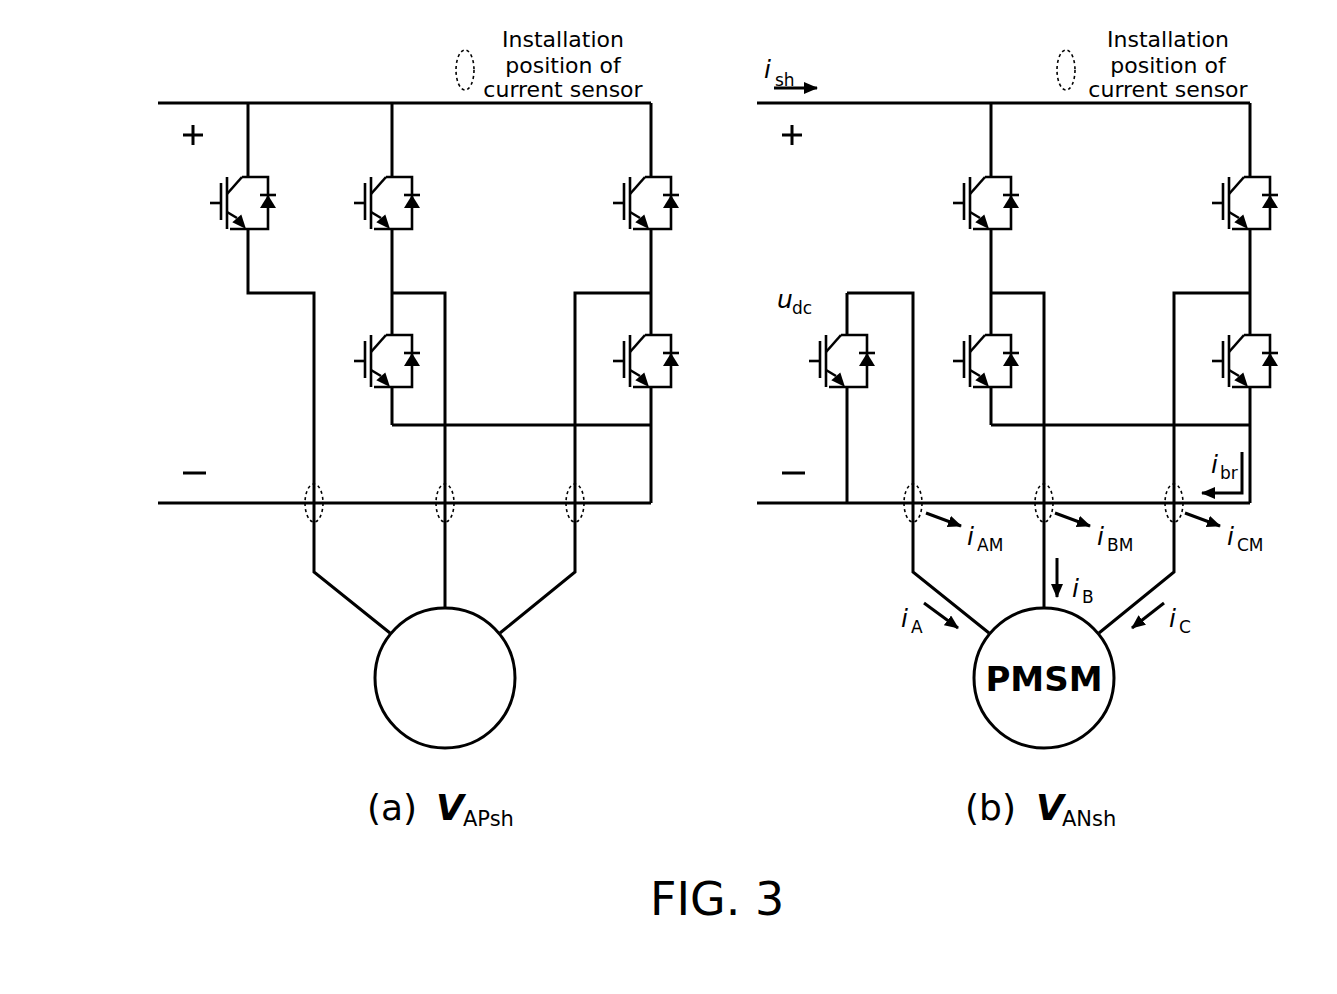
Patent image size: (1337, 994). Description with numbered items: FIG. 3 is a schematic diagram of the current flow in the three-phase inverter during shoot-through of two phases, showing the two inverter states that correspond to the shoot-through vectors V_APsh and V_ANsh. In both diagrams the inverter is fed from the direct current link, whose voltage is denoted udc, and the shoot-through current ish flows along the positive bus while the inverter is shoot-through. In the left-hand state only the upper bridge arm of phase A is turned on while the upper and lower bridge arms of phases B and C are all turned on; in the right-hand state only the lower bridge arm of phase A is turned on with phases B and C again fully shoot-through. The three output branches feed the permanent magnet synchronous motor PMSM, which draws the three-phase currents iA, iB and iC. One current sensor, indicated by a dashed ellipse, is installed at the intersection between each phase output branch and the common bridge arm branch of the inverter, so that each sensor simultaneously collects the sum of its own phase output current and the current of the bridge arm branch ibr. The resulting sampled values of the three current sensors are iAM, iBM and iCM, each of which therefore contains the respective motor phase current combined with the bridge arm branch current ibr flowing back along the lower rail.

The shoot-through current ish is at (218, 88).
The direct current bus voltage udc is at (195, 299).
The permanent magnet synchronous motor PMSM is at (445, 678).
The sampled current value of the phase A current sensor iAM is at (327, 513).
The sampled current value of the phase B current sensor iBM is at (456, 513).
The sampled current value of the phase C current sensor iCM is at (586, 513).
The phase A current iA is at (359, 628).
The phase B current iB is at (458, 558).
The phase C current iC is at (533, 628).
The current of the bridge arm branch ibr is at (643, 452).